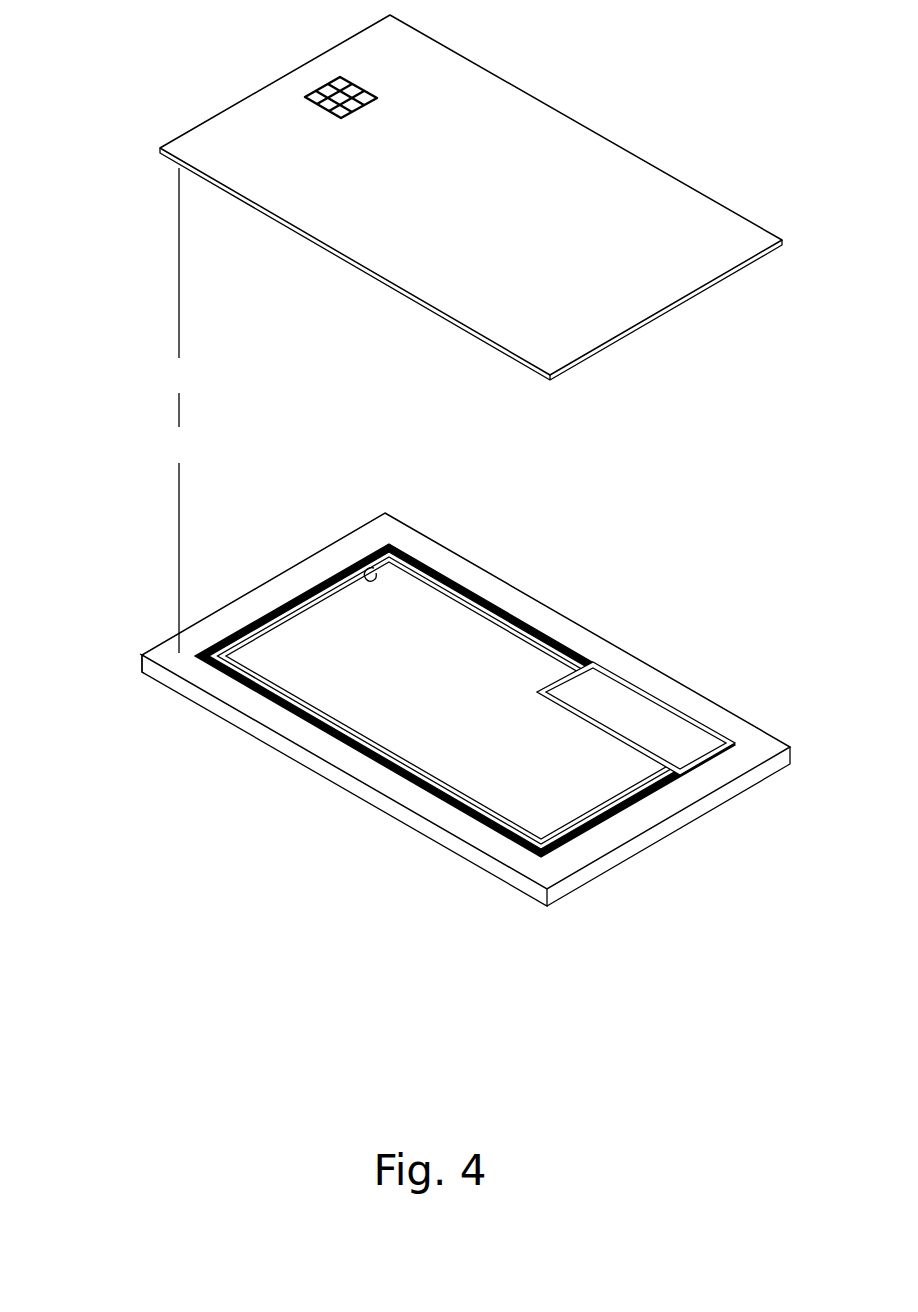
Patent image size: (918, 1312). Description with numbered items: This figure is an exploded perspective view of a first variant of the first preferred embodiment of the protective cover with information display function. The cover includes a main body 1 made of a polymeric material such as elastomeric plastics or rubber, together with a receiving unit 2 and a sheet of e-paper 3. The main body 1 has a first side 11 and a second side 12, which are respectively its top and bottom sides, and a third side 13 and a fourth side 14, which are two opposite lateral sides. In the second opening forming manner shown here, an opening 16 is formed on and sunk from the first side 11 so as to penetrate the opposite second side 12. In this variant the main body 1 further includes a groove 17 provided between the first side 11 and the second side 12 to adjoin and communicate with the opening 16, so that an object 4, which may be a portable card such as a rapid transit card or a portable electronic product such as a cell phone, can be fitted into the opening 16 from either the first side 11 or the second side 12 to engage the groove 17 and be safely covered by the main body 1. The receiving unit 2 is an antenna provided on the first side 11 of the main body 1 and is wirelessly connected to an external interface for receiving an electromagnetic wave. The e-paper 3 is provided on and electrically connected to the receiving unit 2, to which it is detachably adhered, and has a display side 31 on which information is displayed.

The main body 1 is at (446, 646).
The first side 11 is at (752, 735).
The second side 12 is at (302, 767).
The third side 13 is at (672, 820).
The fourth side 14 is at (140, 657).
The opening 16 is at (500, 607).
The groove 17 is at (374, 568).
The receiving unit 2 is at (278, 607).
The e-paper 3 is at (636, 667).
The display side 31 is at (640, 705).
The object 4 is at (597, 173).